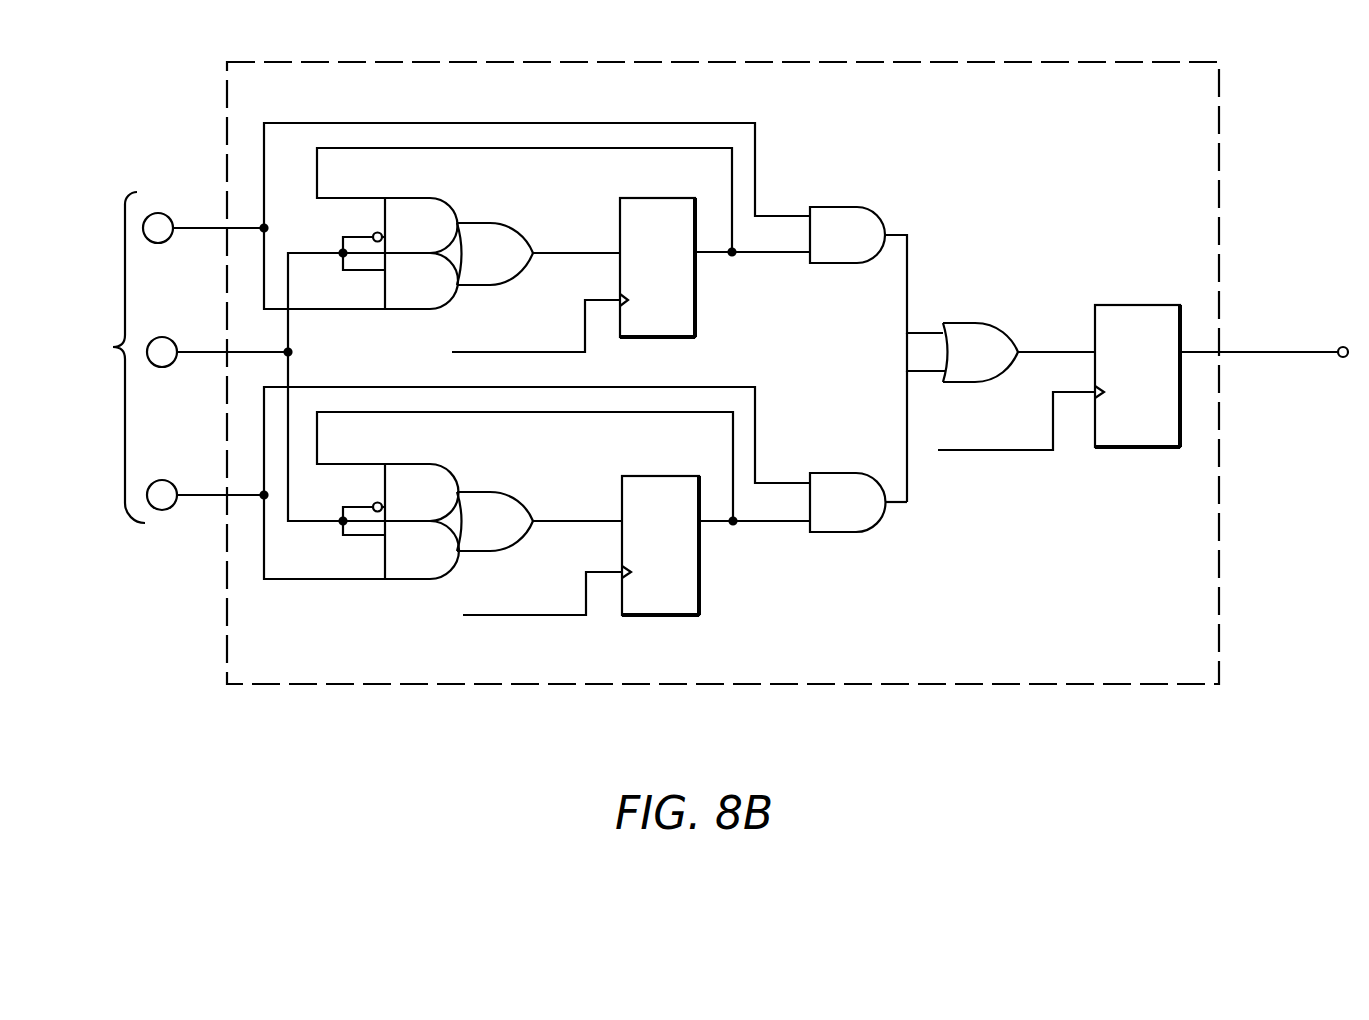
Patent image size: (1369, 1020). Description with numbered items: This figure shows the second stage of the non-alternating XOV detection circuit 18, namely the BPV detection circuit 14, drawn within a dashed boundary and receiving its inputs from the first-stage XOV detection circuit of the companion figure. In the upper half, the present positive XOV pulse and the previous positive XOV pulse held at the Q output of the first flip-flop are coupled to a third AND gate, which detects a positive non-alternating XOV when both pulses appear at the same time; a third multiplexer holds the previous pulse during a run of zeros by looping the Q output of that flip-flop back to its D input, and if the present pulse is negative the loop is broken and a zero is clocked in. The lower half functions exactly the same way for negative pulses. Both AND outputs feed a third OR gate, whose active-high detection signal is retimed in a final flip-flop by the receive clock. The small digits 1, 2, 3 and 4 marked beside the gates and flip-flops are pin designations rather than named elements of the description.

The BPV detection circuit 14 is at (928, 674).
The non-alternating XOV detection circuit 18 is at (293, 749).
The pin 1 (D input of flip-flop FF6) 1 is at (631, 259).
The pin 2 (input of AND3) 2 is at (862, 251).
The pin 3 (output of OR3) 3 is at (1001, 395).
The pin 4 (output of MUX3) 4 is at (537, 237).